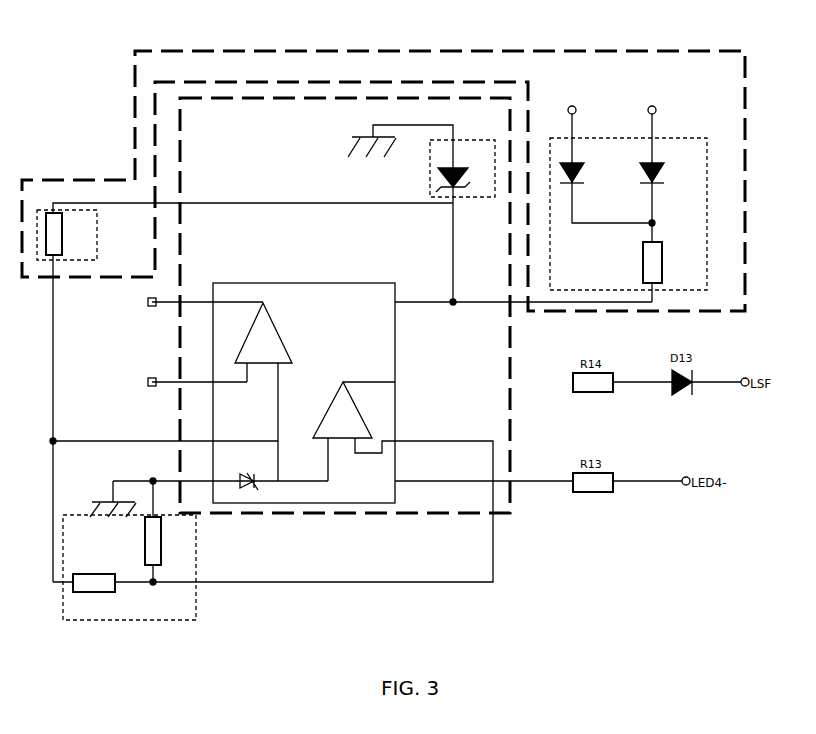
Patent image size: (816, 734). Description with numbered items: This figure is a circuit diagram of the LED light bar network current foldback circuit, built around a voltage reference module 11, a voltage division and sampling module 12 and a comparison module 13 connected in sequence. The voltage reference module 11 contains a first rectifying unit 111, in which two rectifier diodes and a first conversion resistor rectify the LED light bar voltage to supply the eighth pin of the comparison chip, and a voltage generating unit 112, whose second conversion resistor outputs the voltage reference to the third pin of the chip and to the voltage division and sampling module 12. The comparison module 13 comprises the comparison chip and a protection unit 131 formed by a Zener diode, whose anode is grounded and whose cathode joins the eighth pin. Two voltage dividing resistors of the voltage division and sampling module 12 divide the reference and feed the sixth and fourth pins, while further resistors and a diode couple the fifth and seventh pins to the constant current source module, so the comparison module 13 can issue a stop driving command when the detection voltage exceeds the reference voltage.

The voltage reference module 11 is at (383, 51).
The first rectifying unit 111 is at (685, 138).
The voltage generating unit 112 is at (97, 244).
The voltage division and sampling module 12 is at (198, 562).
The comparison module 13 is at (312, 513).
The protection unit 131 is at (470, 140).